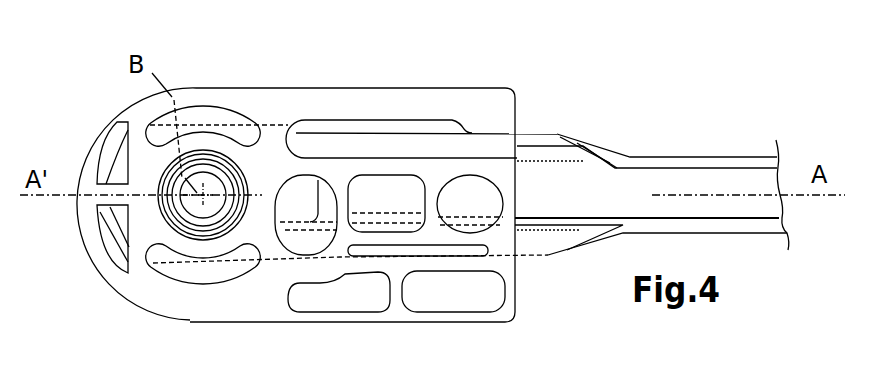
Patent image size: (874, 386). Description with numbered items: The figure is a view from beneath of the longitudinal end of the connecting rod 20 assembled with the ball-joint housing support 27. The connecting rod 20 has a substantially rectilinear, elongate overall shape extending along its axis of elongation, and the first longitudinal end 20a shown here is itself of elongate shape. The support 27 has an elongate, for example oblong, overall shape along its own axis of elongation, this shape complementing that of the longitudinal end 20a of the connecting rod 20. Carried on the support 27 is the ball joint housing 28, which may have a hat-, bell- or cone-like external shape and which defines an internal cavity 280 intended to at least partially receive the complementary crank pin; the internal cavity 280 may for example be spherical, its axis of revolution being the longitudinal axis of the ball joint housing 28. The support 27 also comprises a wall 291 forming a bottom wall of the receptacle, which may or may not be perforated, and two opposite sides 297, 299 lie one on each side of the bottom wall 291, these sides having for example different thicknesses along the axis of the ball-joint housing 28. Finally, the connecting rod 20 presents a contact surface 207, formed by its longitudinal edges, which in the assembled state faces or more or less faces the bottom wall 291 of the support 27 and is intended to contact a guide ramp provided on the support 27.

The connecting rod 20 is at (731, 156).
The first longitudinal end 20a is at (242, 125).
The support 27 is at (310, 74).
The ball joint housing 28 is at (190, 216).
The internal cavity 280 is at (182, 235).
The contact surface 207 is at (497, 247).
The bottom wall 291 is at (428, 257).
The side 297 is at (398, 88).
The side 299 is at (370, 322).